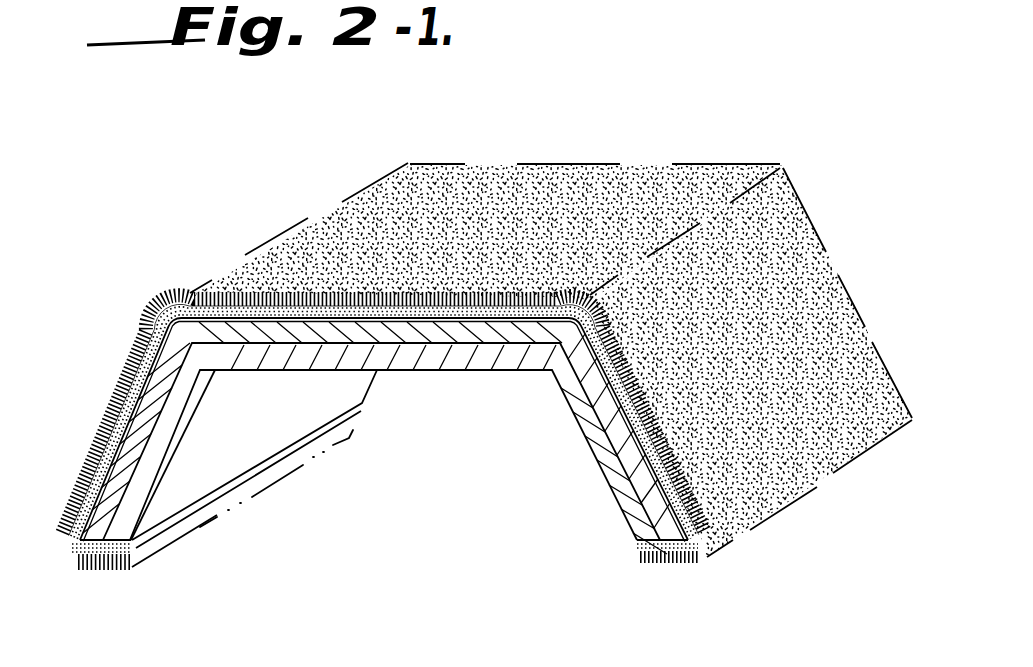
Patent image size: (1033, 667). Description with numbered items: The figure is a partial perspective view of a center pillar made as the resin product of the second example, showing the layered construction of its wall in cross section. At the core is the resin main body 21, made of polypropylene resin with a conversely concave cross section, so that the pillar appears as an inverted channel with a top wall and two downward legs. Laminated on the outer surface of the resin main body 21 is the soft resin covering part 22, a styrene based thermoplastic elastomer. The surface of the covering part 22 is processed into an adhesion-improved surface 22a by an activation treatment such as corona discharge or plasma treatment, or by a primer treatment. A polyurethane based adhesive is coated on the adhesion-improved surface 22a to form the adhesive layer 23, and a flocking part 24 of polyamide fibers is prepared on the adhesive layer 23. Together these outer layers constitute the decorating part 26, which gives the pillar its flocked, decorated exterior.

The resin main body 21 is at (622, 492).
The soft resin covering part 22 is at (657, 518).
The adhesion-improved surface 22a is at (670, 547).
The adhesive layer 23 is at (690, 562).
The flocking part 24 is at (705, 556).
The decorating part 26 is at (530, 572).